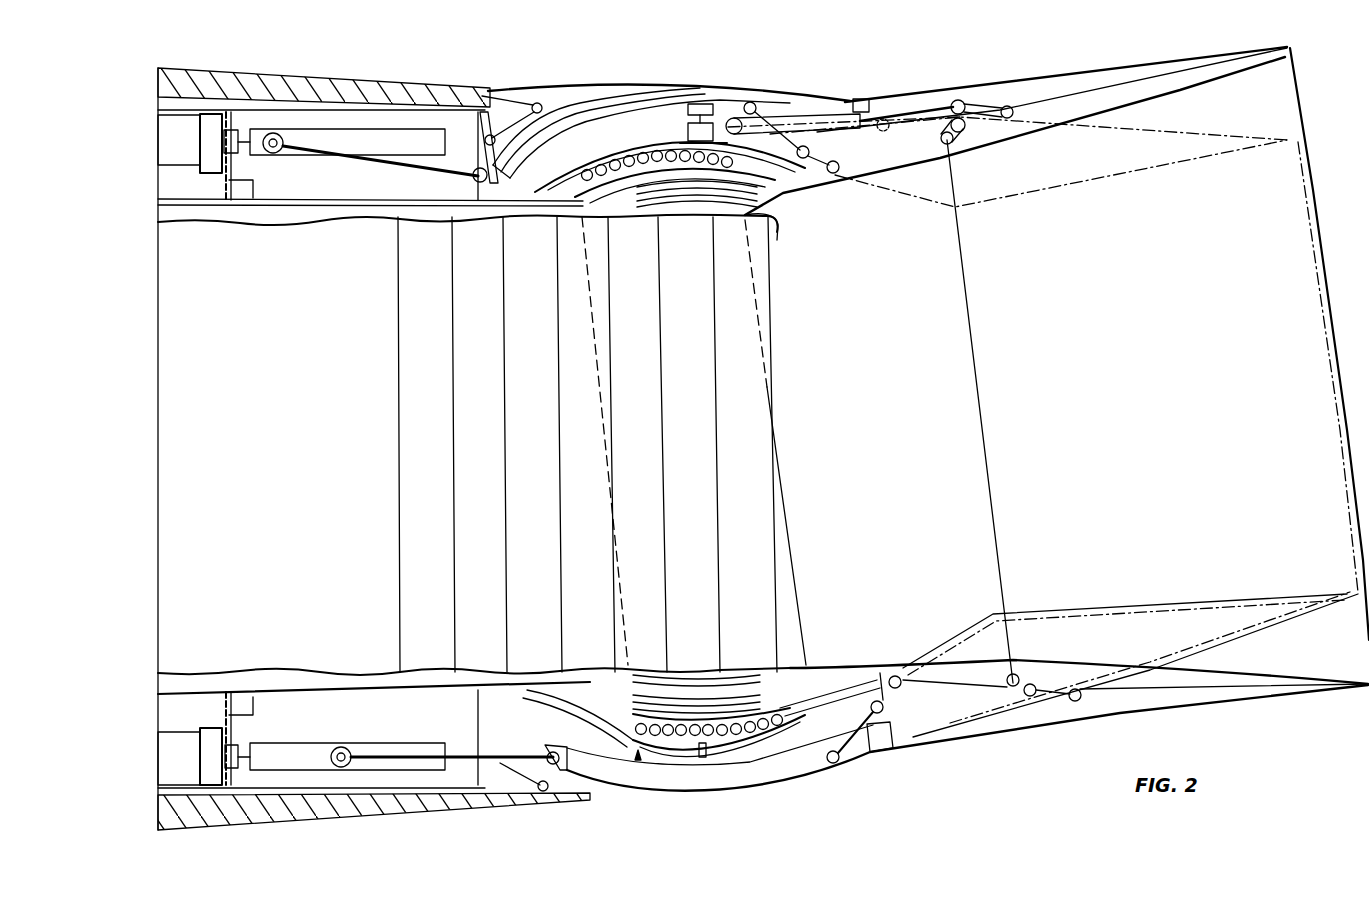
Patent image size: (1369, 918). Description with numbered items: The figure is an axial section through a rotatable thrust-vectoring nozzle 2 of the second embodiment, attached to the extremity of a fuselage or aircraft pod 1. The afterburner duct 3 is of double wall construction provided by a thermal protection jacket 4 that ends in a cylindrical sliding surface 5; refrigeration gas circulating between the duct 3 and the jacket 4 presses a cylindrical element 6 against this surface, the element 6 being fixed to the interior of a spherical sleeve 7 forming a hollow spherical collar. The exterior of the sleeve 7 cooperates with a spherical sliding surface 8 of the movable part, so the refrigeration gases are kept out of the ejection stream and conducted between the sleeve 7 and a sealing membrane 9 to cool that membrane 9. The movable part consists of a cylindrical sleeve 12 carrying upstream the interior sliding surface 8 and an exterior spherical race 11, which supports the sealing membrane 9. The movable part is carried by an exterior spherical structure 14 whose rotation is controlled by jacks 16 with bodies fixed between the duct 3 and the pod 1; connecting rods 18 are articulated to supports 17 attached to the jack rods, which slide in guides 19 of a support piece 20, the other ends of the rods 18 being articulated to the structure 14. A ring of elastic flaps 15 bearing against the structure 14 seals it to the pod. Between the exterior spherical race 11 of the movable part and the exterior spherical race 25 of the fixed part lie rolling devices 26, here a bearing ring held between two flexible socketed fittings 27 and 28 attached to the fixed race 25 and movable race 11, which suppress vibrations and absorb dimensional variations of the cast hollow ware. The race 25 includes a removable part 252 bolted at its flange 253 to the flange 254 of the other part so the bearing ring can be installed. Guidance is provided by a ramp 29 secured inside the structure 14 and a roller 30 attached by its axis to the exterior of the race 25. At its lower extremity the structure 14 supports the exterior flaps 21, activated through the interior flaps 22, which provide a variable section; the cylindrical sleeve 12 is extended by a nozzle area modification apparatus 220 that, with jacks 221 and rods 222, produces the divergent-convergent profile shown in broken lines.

The fuselage or aircraft pod 1 is at (345, 70).
The rotatable thrust-vectoring nozzle 2 is at (849, 90).
The afterburner duct 3 is at (225, 202).
The thermal protection jacket 4 is at (290, 222).
The cylindrical sliding surface 5 is at (707, 212).
The cylindrical element 6 is at (770, 218).
The spherical sleeve 7 is at (650, 683).
The spherical sliding surface 8 is at (793, 670).
The sealing membrane 9 is at (625, 190).
The exterior spherical race 11 is at (673, 720).
The cylindrical sleeve 12 is at (843, 664).
The exterior spherical structure 14 is at (866, 765).
The ring of elastic flaps 15 is at (600, 800).
The jacks 16 is at (180, 157).
The supports 17 is at (280, 150).
The connecting rods 18 is at (350, 155).
The guides 19 is at (423, 135).
The support piece 20 is at (402, 118).
The exterior flaps 21 is at (943, 92).
The interior flaps 22 is at (933, 674).
The exterior spherical race of the fixed part 25 is at (638, 760).
The rolling devices 26 is at (808, 710).
The flexible socketed fitting 27 is at (620, 720).
The flexible socketed fitting 28 is at (612, 717).
The ramp 29 is at (593, 123).
The roller 30 is at (697, 106).
The nozzle area modification apparatus 220 is at (1058, 113).
The jacks 221 is at (848, 103).
The rods 222 is at (978, 118).
The removable part 252 is at (783, 747).
The flange 253 is at (713, 757).
The flange 254 is at (683, 745).